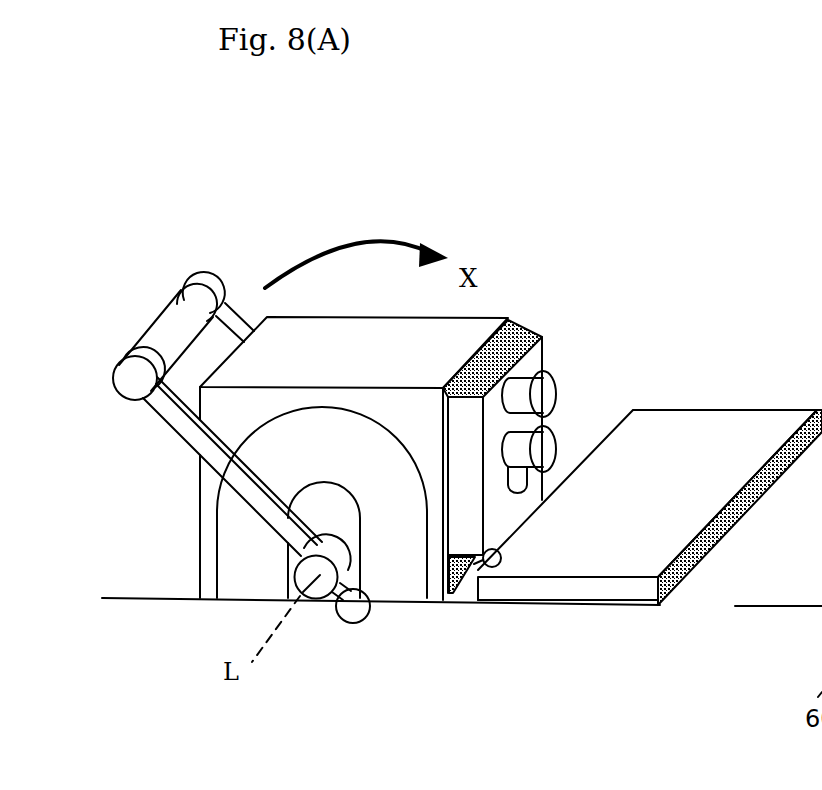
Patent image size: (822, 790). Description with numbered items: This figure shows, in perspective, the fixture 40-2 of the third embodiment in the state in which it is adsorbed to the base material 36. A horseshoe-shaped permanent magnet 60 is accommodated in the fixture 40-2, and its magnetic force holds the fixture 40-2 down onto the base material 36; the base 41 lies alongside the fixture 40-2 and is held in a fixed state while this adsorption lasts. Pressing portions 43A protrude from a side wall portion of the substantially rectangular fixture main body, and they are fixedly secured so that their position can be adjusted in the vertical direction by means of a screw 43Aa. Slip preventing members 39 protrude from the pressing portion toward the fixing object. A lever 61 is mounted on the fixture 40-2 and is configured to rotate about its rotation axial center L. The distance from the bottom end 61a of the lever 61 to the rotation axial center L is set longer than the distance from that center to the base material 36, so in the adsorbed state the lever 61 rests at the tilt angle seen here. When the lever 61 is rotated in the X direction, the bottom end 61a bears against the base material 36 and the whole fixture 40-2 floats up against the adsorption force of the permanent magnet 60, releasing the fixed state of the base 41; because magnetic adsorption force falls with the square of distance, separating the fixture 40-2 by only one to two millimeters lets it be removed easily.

The fixture 40-2 is at (245, 266).
The base 41 is at (697, 455).
The pressing portions 43A is at (517, 333).
The screw 43Aa is at (558, 447).
The permanent magnet 60 is at (243, 543).
The lever 61 is at (179, 336).
The bottom end of the lever 61a is at (370, 600).
The base material 36 is at (140, 573).
The slip preventing members 39 is at (535, 517).